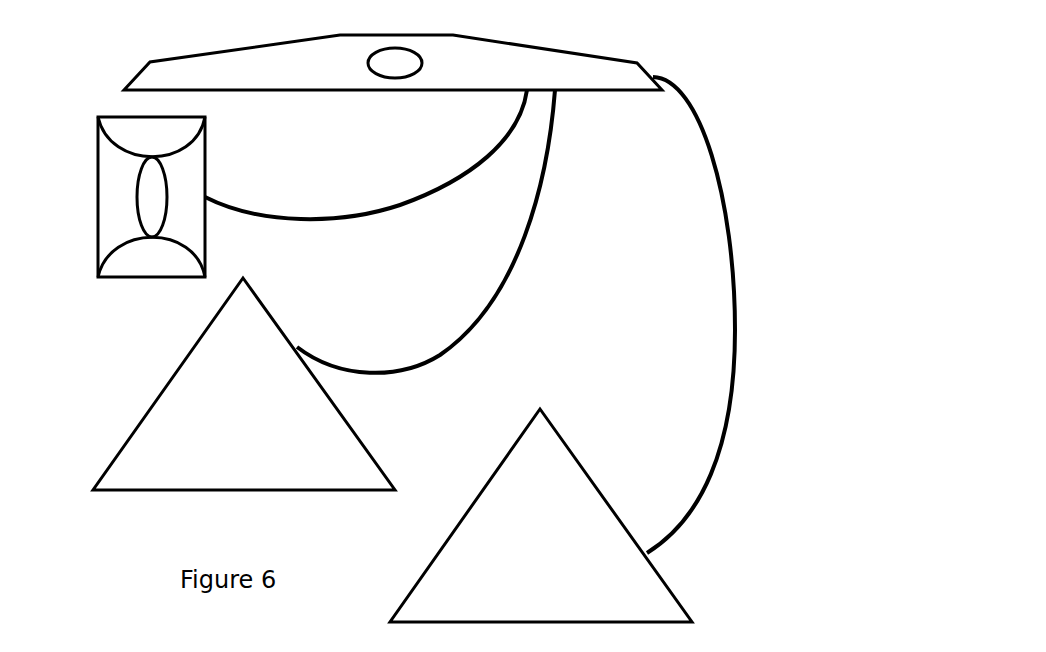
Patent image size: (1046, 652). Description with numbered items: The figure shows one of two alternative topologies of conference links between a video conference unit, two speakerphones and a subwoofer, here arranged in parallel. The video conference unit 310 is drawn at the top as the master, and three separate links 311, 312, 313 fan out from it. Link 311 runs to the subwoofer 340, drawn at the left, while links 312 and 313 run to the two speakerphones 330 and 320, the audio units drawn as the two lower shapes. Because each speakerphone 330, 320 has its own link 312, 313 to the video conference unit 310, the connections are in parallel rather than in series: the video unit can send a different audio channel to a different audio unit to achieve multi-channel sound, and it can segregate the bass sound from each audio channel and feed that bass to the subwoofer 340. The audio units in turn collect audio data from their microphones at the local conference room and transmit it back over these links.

The housing / light guide body 310 is at (565, 50).
The first flexible light guide 311 is at (373, 222).
The second flexible light guide 312 is at (512, 252).
The third flexible light guide 313 is at (728, 395).
The second object / prism 320 is at (672, 585).
The first object / prism 330 is at (363, 443).
The subwoofer 340 is at (125, 280).